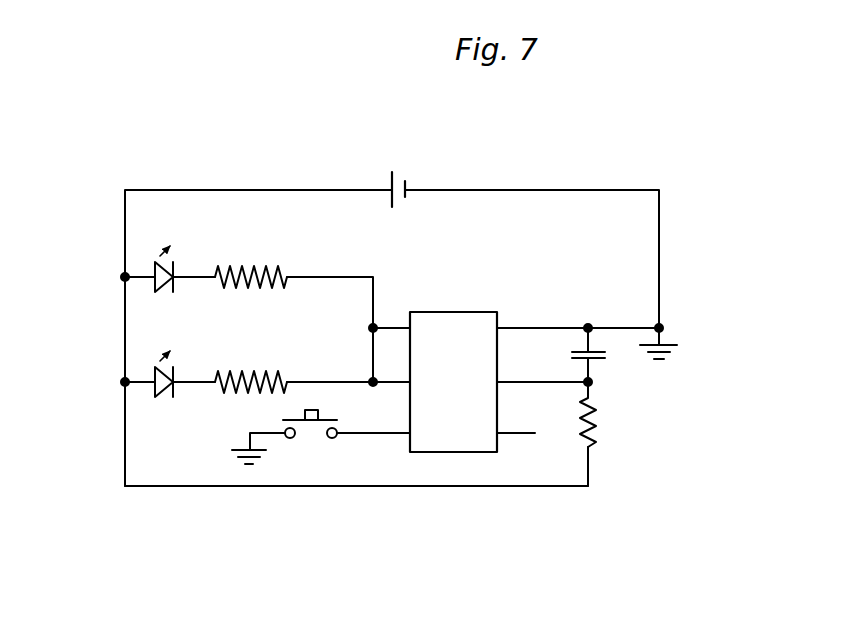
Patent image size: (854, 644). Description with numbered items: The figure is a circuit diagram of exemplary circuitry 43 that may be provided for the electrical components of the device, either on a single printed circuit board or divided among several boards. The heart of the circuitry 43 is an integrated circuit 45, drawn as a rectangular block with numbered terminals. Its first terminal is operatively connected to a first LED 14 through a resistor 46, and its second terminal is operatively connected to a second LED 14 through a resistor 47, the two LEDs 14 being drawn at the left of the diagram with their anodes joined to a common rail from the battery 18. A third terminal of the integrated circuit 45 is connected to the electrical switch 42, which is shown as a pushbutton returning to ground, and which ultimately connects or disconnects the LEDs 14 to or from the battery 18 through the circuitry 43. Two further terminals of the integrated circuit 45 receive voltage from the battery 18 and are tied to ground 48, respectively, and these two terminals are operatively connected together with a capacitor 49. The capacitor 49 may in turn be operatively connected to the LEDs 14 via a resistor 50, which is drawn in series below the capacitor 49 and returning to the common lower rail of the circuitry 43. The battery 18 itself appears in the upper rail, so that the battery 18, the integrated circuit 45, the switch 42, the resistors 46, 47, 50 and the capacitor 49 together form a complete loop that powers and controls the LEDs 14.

The LED 14 is at (148, 260).
The battery 18 is at (382, 170).
The electrical switch 42 is at (318, 460).
The circuitry 43 is at (500, 512).
The integrated circuit 45 is at (455, 288).
The resistor 46 is at (245, 272).
The resistor 47 is at (240, 378).
The ground 48 is at (657, 363).
The capacitor 49 is at (605, 358).
The resistor 50 is at (595, 430).